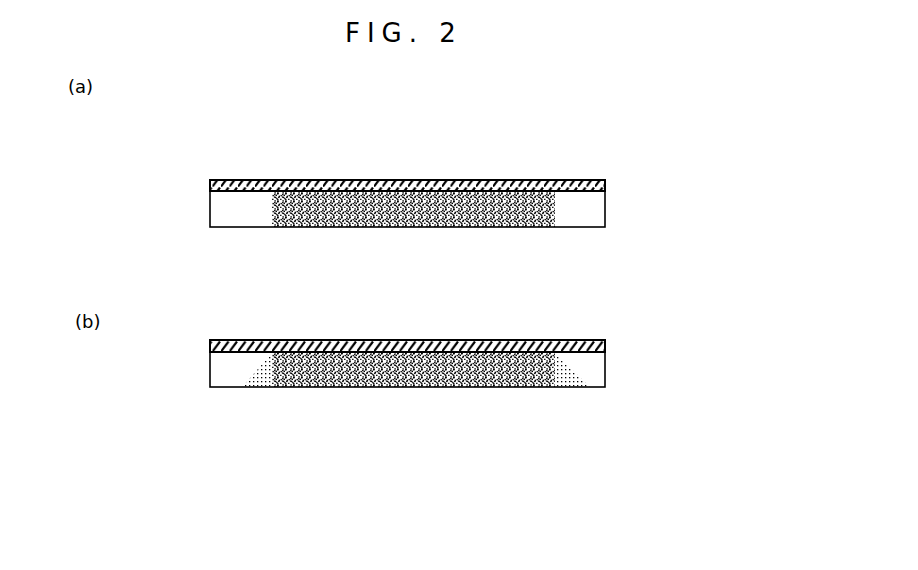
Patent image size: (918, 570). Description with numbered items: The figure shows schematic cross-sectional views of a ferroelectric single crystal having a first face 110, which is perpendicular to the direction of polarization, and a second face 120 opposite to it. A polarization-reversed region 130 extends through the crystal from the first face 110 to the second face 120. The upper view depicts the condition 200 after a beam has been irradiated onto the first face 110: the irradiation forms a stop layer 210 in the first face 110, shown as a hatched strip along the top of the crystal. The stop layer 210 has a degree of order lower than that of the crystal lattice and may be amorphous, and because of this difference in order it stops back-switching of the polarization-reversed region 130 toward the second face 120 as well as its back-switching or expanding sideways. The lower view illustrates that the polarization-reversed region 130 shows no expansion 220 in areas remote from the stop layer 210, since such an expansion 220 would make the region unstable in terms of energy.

The first face 110 is at (572, 180).
The second face 120 is at (585, 228).
The polarization-reversed region 130 is at (400, 203).
The condition after irradiation of the beam 200 is at (616, 153).
The stop layer 210 is at (213, 187).
The expansion 220 is at (567, 375).